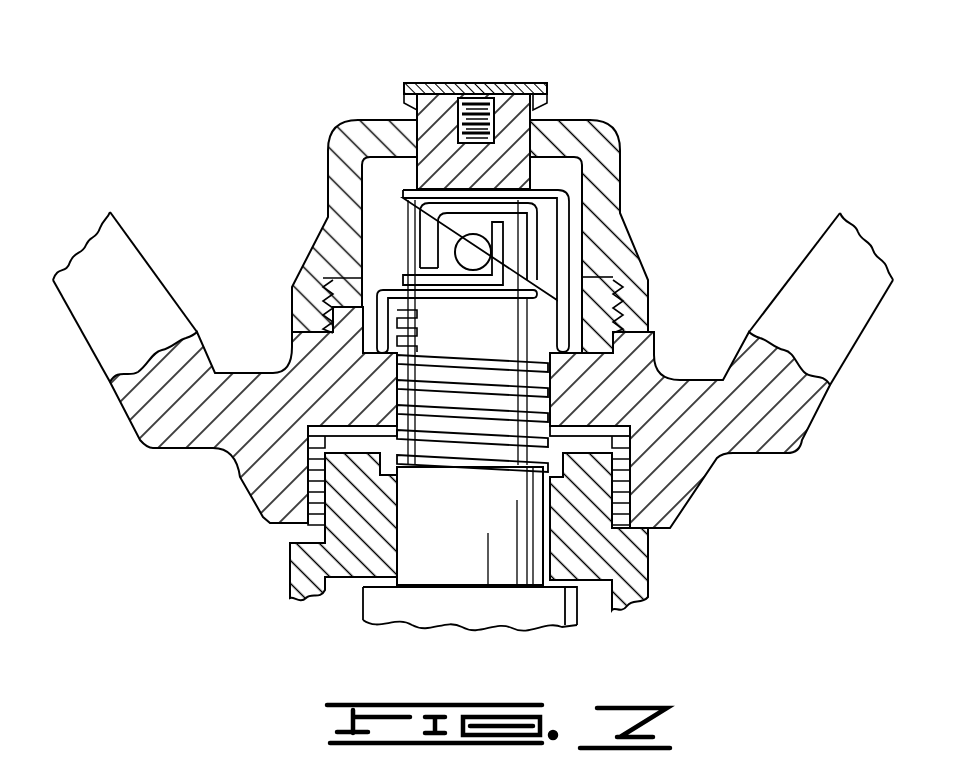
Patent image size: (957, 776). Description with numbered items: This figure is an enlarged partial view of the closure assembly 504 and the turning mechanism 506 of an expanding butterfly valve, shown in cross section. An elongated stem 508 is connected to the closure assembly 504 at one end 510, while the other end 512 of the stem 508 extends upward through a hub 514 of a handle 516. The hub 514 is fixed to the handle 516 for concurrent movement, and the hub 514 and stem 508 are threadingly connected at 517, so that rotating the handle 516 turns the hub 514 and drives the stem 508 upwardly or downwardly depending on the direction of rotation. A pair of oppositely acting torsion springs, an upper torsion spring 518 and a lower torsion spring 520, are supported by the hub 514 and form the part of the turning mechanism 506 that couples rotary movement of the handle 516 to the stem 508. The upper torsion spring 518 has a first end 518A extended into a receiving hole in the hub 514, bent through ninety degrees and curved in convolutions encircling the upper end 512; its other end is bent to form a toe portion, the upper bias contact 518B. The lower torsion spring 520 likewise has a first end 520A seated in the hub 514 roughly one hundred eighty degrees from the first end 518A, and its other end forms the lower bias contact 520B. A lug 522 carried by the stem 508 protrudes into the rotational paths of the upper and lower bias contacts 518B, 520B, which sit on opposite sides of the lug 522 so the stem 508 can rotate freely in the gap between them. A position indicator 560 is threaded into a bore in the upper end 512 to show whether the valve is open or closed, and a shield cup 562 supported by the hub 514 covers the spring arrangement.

The closure assembly 504 is at (583, 630).
The turning mechanism 506 is at (255, 76).
The elongated stem 508 is at (507, 510).
The one end of the stem 510 is at (452, 553).
The other end of the stem 512 is at (553, 121).
The hub 514 is at (240, 476).
The handle 516 is at (113, 347).
The threaded connection 517 is at (548, 406).
The upper torsion spring 518 is at (560, 190).
The first end of the upper torsion spring 518A is at (580, 327).
The upper bias contact 518B is at (433, 233).
The lower torsion spring 520 is at (380, 290).
The first end of the lower torsion spring 520A is at (377, 346).
The lower bias contact 520B is at (502, 228).
The lug 522 is at (481, 252).
The position indicator 560 is at (482, 82).
The shield cup 562 is at (366, 118).